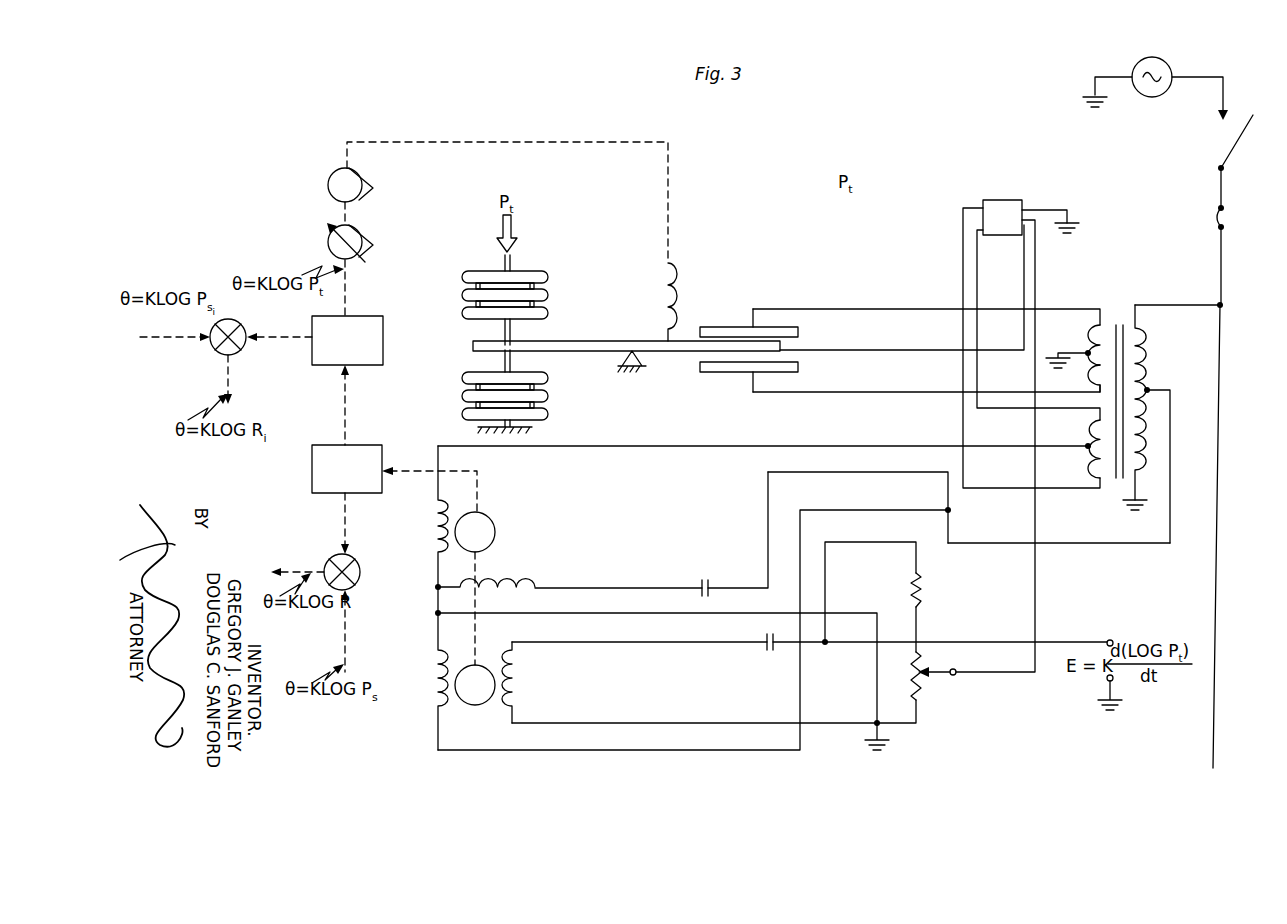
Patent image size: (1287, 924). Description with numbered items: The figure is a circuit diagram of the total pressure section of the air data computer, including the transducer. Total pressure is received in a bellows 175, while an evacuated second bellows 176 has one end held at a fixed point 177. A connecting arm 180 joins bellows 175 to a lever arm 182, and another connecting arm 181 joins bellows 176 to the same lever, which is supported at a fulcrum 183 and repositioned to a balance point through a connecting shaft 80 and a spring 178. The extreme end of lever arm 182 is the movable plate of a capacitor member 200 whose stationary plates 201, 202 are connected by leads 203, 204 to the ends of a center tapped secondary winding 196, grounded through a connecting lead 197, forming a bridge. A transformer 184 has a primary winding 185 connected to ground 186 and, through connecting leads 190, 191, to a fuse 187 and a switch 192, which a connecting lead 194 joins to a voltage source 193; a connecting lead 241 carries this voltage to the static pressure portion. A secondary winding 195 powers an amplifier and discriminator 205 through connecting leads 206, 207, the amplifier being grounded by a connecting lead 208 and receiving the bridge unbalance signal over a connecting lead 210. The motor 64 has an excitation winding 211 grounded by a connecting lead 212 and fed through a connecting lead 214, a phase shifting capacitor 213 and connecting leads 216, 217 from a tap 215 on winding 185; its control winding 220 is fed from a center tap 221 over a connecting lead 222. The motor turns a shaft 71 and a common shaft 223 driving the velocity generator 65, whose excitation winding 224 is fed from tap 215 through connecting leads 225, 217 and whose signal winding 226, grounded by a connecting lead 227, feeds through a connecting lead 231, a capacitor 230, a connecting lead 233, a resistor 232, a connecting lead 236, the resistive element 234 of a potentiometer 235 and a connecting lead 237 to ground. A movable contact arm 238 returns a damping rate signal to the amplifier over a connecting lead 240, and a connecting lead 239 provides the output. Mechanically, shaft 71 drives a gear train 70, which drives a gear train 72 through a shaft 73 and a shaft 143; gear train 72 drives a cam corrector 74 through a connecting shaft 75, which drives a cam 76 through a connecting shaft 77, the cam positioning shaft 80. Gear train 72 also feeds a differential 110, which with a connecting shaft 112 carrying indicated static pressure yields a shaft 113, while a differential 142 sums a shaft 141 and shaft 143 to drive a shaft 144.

The motor 64 is at (540, 527).
The velocity generator 65 is at (570, 692).
The gear train 70 is at (356, 447).
The shaft 71 is at (480, 490).
The gear train 72 is at (384, 349).
The shaft 73 is at (347, 412).
The cam corrector 74 is at (362, 243).
The connecting shaft 75 is at (348, 290).
The cam 76 is at (360, 186).
The connecting shaft 77 is at (348, 216).
The connecting shaft 80 is at (527, 140).
The differential 110 is at (243, 333).
The connecting shaft 112 is at (178, 337).
The shaft 113 is at (231, 366).
The shaft 141 is at (347, 642).
The differential 142 is at (360, 576).
The shaft 143 is at (347, 528).
The shaft 144 is at (300, 563).
The bellows 175 is at (545, 279).
The second bellows 176 is at (545, 403).
The fixed point 177 is at (534, 426).
The spring 178 is at (660, 297).
The connecting arm 180 is at (510, 331).
The connecting arm 181 is at (510, 361).
The lever arm 182 is at (576, 343).
The fulcrum 183 is at (642, 366).
The transformer 184 is at (1132, 288).
The primary winding 185 is at (1150, 364).
The ground 186 is at (1094, 106).
The fuse 187 is at (1223, 214).
The connecting lead 190 is at (1220, 262).
The connecting lead 191 is at (1198, 306).
The switch 192 is at (1240, 138).
The voltage source 193 is at (1162, 96).
The connecting lead 194 is at (1196, 78).
The secondary winding 195 is at (1090, 465).
The secondary winding 196 is at (1090, 374).
The connecting lead 197 is at (1082, 341).
The capacitor member 200 is at (778, 294).
The stationary plate 201 is at (745, 325).
The stationary plate 202 is at (745, 376).
The lead 203 is at (923, 309).
The lead 204 is at (905, 392).
The amplifier and discriminator 205 is at (1008, 200).
The connecting lead 206 is at (1011, 348).
The connecting lead 207 is at (978, 243).
The connecting lead 208 is at (1042, 210).
The connecting lead 210 is at (920, 350).
The excitation winding 211 is at (497, 580).
The connecting lead 212 is at (548, 613).
The capacitor 213 is at (705, 578).
The connecting lead 214 is at (600, 586).
The tap 215 is at (1149, 390).
The connecting lead 216 is at (834, 472).
The connecting lead 217 is at (1093, 545).
The control winding 220 is at (432, 542).
The center tap 221 is at (1086, 447).
The connecting lead 222 is at (696, 446).
The common shaft 223 is at (478, 641).
The excitation winding 224 is at (436, 692).
The connecting lead 225 is at (628, 750).
The signal winding 226 is at (522, 666).
The connecting lead 227 is at (702, 722).
The phase shifting capacitor 230 is at (770, 652).
The connecting lead 231 is at (684, 642).
The resistor 232 is at (921, 596).
The connecting lead 233 is at (858, 542).
The resistive element 234 is at (912, 678).
The potentiometer 235 is at (980, 706).
The connecting lead 236 is at (918, 634).
The connecting lead 237 is at (918, 716).
The movable contact arm 238 is at (936, 668).
The connecting lead 239 is at (1080, 640).
The connecting lead 240 is at (1035, 623).
The connecting lead 241 is at (1216, 607).